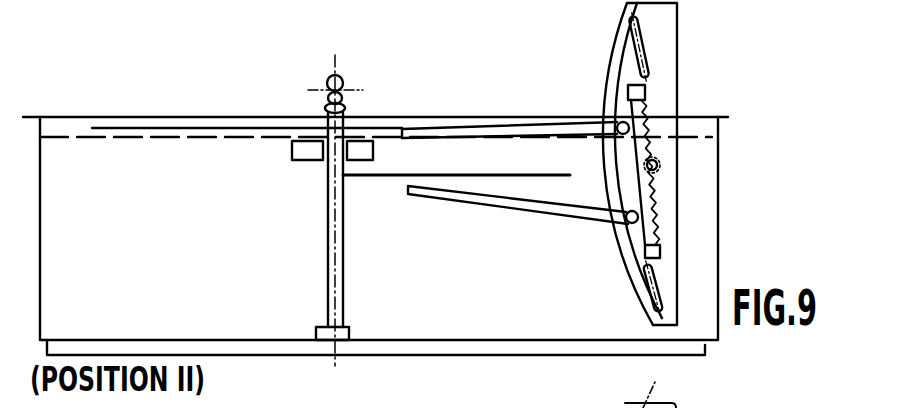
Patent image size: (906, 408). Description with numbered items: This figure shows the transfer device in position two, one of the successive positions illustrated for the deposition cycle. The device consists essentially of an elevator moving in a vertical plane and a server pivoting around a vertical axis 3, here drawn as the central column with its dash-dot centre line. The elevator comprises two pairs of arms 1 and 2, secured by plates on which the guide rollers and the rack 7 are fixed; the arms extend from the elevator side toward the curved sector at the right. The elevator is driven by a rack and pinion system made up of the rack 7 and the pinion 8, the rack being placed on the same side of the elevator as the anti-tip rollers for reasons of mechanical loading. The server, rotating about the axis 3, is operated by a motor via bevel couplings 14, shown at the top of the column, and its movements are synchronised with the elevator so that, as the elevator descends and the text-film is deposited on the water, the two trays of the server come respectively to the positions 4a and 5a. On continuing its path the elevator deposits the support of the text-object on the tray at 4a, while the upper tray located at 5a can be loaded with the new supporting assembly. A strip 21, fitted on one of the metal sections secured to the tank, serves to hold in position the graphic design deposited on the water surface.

The pair of arms 1 is at (578, 128).
The pair of arms 2 is at (530, 208).
The vertical axis 3 is at (322, 302).
The tray position 4a is at (392, 178).
The tray position 5a is at (192, 128).
The rack 7 is at (640, 234).
The pinion 8 is at (660, 160).
The bevel coupling 14 is at (345, 88).
The strip 21 is at (395, 133).